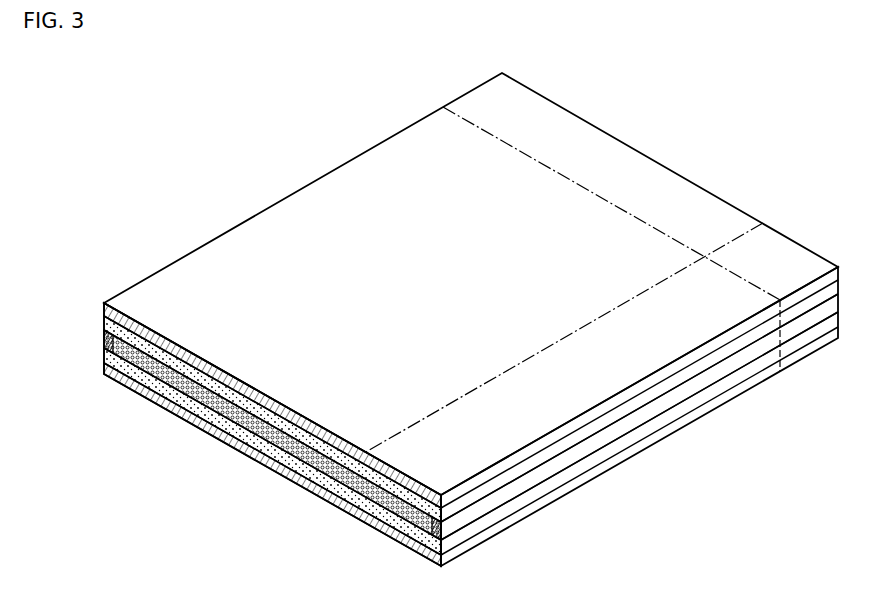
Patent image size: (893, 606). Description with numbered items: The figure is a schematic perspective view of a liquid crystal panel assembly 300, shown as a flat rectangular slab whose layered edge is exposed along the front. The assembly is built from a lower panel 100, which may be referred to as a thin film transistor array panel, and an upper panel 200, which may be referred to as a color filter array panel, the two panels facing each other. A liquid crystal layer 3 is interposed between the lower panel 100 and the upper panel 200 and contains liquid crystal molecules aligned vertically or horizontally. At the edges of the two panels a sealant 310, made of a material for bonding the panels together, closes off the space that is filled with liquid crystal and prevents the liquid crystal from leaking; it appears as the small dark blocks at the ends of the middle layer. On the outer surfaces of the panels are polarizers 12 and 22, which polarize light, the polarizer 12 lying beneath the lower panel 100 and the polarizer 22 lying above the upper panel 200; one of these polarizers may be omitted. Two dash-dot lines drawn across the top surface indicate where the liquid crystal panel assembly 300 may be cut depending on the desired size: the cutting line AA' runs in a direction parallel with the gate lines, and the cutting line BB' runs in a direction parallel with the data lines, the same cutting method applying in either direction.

The liquid crystal panel assembly 300 is at (243, 170).
The sealant 310 is at (103, 336).
The polarizer 22 is at (163, 355).
The upper panel 200 is at (207, 390).
The liquid crystal layer 3 is at (250, 420).
The lower panel 100 is at (293, 463).
The polarizer 12 is at (333, 500).
The cutting line BB' is at (611, 217).
The cutting line AA' is at (576, 301).